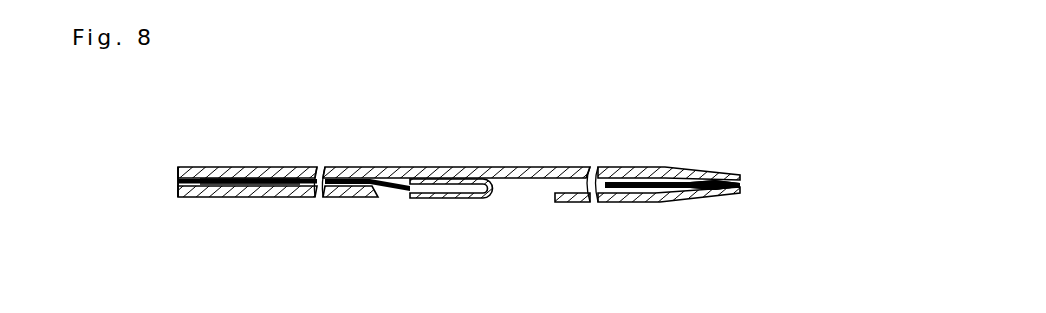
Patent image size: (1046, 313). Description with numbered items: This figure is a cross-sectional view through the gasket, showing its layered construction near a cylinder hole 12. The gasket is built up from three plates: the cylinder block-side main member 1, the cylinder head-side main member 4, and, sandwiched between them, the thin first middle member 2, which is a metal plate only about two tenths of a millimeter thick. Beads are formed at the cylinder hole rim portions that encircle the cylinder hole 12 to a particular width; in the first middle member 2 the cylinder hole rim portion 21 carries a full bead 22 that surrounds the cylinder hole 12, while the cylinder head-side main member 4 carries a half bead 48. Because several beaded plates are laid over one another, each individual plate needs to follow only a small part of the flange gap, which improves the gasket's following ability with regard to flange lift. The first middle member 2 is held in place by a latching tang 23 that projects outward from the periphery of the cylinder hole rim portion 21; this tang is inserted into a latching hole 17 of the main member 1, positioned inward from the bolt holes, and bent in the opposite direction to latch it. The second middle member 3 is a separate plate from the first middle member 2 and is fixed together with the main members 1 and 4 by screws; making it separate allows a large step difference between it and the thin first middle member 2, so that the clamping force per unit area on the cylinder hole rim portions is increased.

The cylinder block-side main member 1 is at (178, 196).
The first middle member 2 is at (178, 182).
The second middle member 3 is at (651, 204).
The cylinder head-side main member 4 is at (289, 167).
The cylinder hole 12 is at (156, 160).
The latching hole 17 is at (529, 202).
The cylinder hole rim portion 21 is at (235, 183).
The full bead around cylinder hole 22 is at (267, 186).
The latching tang 23 is at (465, 199).
The half bead 48 is at (665, 204).